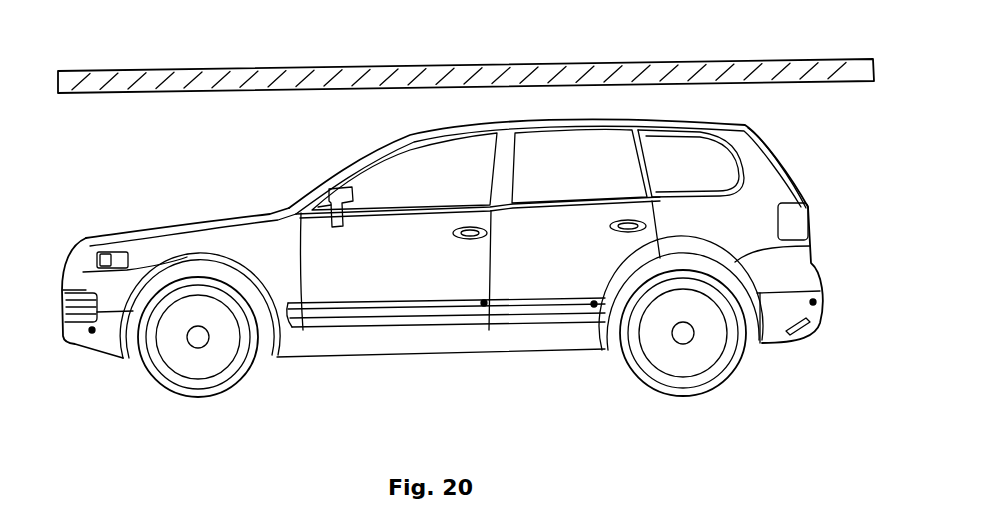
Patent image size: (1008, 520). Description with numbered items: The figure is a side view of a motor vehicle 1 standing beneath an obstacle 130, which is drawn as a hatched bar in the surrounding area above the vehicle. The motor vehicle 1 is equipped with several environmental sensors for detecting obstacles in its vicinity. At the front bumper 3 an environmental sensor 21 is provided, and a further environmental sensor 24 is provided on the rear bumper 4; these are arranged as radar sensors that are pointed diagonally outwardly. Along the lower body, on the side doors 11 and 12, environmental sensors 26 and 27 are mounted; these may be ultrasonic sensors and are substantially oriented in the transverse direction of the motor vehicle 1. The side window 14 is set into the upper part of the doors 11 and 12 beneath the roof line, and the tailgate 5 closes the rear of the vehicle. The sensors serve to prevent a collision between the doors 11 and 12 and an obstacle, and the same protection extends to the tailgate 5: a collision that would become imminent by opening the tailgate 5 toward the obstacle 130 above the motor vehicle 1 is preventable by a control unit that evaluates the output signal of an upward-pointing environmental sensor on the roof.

The motor vehicle 1 is at (108, 213).
The front bumper 3 is at (72, 340).
The rear bumper 4 is at (823, 288).
The tailgate 5 is at (780, 163).
The side door 11 is at (330, 248).
The side door 12 is at (522, 280).
The side window 14 is at (383, 178).
The environmental sensor 21 is at (92, 334).
The environmental sensor 24 is at (815, 305).
The environmental sensor 26 is at (483, 306).
The environmental sensor 27 is at (593, 307).
The obstacle 130 is at (100, 70).